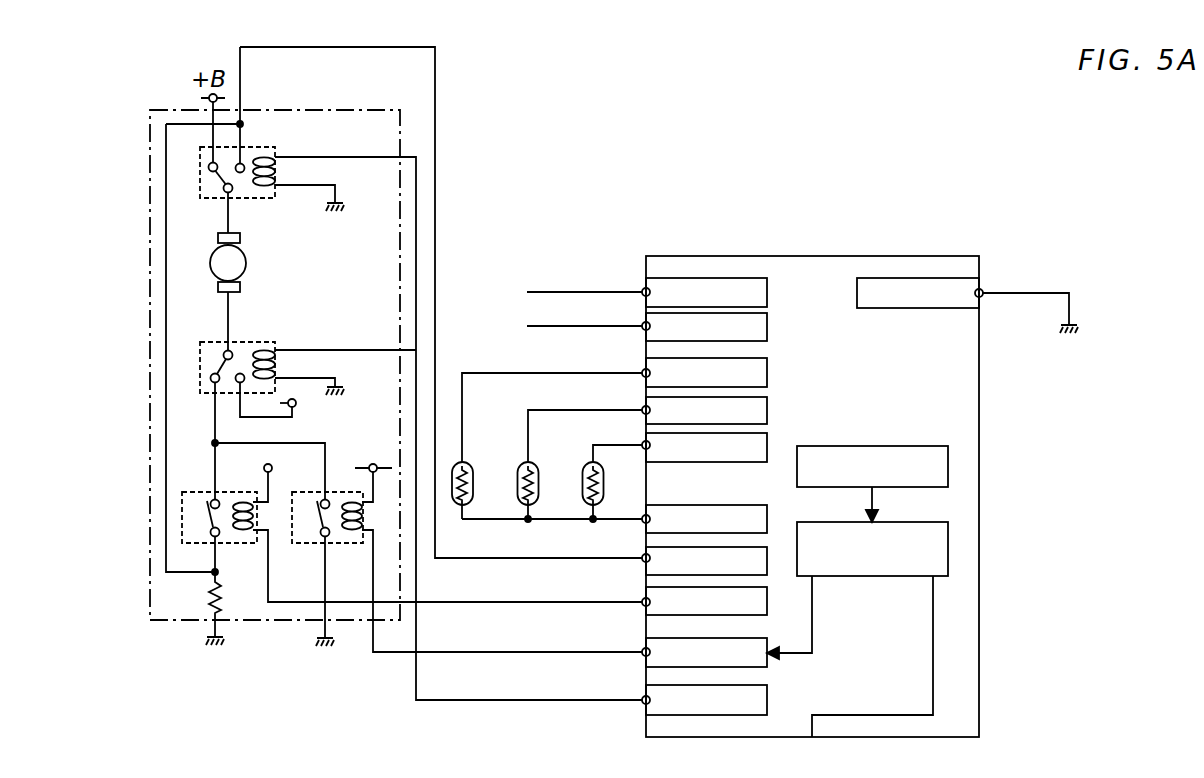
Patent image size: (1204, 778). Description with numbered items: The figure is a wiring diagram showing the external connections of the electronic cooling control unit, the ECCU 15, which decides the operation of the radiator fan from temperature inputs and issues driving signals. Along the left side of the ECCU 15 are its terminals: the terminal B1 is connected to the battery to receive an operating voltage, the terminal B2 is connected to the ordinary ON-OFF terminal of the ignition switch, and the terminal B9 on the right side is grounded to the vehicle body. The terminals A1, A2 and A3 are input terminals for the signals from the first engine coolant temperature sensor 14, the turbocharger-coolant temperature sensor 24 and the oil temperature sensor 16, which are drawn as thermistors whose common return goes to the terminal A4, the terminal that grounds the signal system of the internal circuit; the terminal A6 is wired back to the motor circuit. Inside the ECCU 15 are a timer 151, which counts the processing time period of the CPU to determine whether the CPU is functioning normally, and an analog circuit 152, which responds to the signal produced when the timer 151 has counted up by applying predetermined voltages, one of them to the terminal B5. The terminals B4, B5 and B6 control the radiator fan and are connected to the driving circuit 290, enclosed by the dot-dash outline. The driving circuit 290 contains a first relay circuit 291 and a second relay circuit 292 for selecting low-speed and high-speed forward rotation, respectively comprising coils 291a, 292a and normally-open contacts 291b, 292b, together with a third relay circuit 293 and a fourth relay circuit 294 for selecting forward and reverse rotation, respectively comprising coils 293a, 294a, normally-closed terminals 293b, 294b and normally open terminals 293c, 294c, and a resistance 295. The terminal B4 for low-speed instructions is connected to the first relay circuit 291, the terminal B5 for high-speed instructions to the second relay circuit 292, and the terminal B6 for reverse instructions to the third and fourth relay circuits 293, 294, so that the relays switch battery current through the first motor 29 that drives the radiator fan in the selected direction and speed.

The driving circuit 290 is at (308, 109).
The fourth relay circuit 294 is at (361, 383).
The coil 294a is at (277, 171).
The normally-closed terminal 294b is at (208, 166).
The normally open terminal 294c is at (242, 162).
The first motor 29 is at (247, 258).
The third relay circuit 293 is at (248, 390).
The coil 293a is at (277, 363).
The normally-closed terminal 293b is at (211, 375).
The normally open terminal 293c is at (236, 383).
The first relay circuit 291 is at (361, 522).
The coil 291a is at (240, 531).
The normally-open contact 291b is at (210, 517).
The second relay circuit 292 is at (440, 551).
The coil 292a is at (347, 540).
The normally-open contact 292b is at (330, 499).
The resistance 295 is at (207, 596).
The first engine coolant temperature sensor 14 is at (467, 460).
The turbocharger-coolant temperature sensor 24 is at (518, 461).
The oil temperature sensor 16 is at (583, 461).
The electronic cooling control unit 15 is at (777, 497).
The timer 151 is at (900, 440).
The analog circuit 152 is at (900, 523).
The terminal B1 is at (646, 285).
The terminal B2 is at (646, 320).
The terminal A1 is at (646, 366).
The terminal A2 is at (646, 404).
The terminal A3 is at (646, 440).
The terminal A4 is at (660, 515).
The terminal A6 is at (646, 552).
The terminal B4 is at (646, 595).
The terminal B5 is at (646, 645).
The terminal B6 is at (646, 693).
The terminal B9 is at (979, 289).